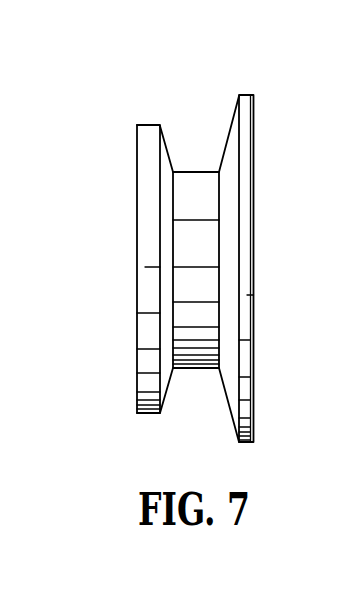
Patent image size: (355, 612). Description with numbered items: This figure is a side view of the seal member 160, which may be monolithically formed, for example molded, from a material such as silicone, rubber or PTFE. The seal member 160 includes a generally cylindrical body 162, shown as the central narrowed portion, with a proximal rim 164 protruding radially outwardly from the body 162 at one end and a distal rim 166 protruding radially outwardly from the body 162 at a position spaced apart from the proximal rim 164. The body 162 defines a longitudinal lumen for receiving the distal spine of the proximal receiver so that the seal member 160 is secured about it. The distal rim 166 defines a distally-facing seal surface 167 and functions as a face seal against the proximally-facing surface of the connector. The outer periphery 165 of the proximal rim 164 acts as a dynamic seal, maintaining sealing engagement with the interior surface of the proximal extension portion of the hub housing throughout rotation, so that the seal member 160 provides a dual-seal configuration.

The seal member 160 is at (191, 238).
The body 162 is at (195, 285).
The proximal rim 164 is at (227, 352).
The outer periphery 165 is at (248, 388).
The distal rim 166 is at (105, 269).
The distally-facing seal surface 167 is at (135, 277).